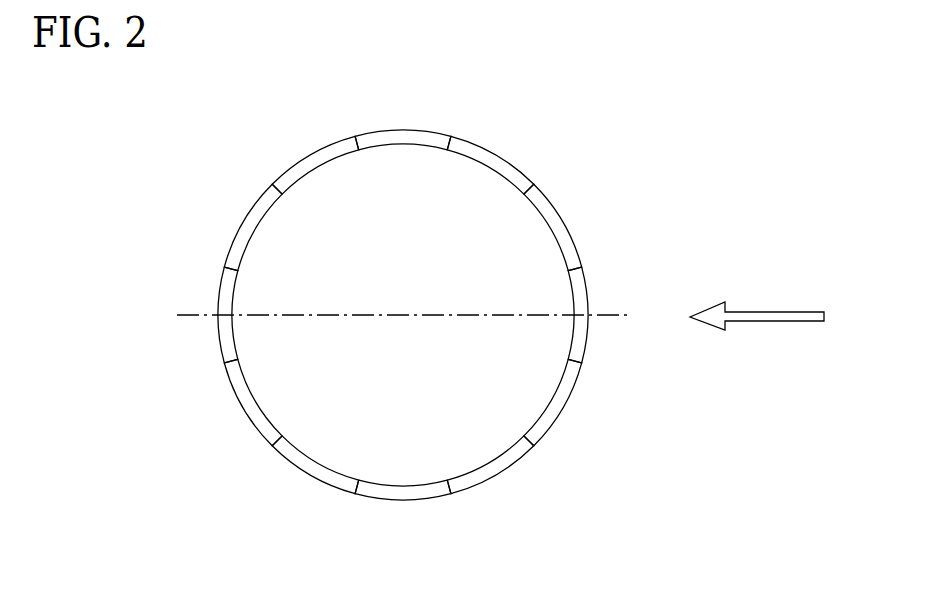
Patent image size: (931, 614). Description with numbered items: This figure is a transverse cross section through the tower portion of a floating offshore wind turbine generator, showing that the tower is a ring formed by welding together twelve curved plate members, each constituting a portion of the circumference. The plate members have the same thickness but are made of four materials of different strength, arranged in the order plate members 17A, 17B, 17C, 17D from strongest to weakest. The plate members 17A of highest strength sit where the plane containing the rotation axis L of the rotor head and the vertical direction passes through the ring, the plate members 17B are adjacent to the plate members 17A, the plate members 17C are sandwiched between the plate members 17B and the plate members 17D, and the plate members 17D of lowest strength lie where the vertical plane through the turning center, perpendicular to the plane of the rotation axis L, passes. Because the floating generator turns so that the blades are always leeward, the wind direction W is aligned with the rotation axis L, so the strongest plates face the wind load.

The plate members 17A is at (218, 292).
The plate members 17B is at (240, 222).
The plate members 17C is at (312, 152).
The plate members 17D is at (402, 128).
The rotation axis L is at (193, 318).
The wind direction W is at (777, 312).